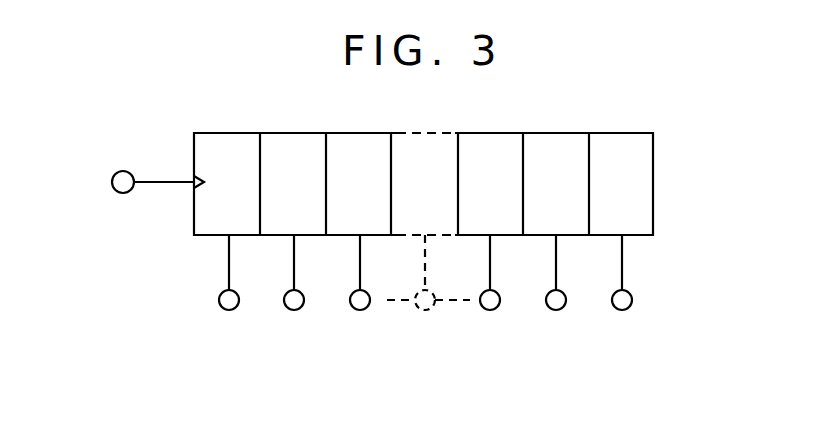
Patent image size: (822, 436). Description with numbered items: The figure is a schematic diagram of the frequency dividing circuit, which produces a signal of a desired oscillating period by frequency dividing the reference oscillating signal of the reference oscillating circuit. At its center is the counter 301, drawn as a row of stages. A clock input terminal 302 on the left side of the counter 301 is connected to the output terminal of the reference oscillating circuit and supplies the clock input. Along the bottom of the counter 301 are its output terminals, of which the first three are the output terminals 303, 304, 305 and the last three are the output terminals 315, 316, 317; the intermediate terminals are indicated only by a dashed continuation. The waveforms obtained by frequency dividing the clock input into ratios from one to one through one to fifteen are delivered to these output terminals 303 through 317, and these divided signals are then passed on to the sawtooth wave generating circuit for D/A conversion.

The counter 301 is at (207, 237).
The clock input terminal 302 is at (123, 171).
The output terminal 303 is at (220, 307).
The output terminal 304 is at (287, 304).
The output terminal 305 is at (352, 304).
The output terminal 315 is at (480, 305).
The output terminal 316 is at (547, 304).
The output terminal 317 is at (613, 304).